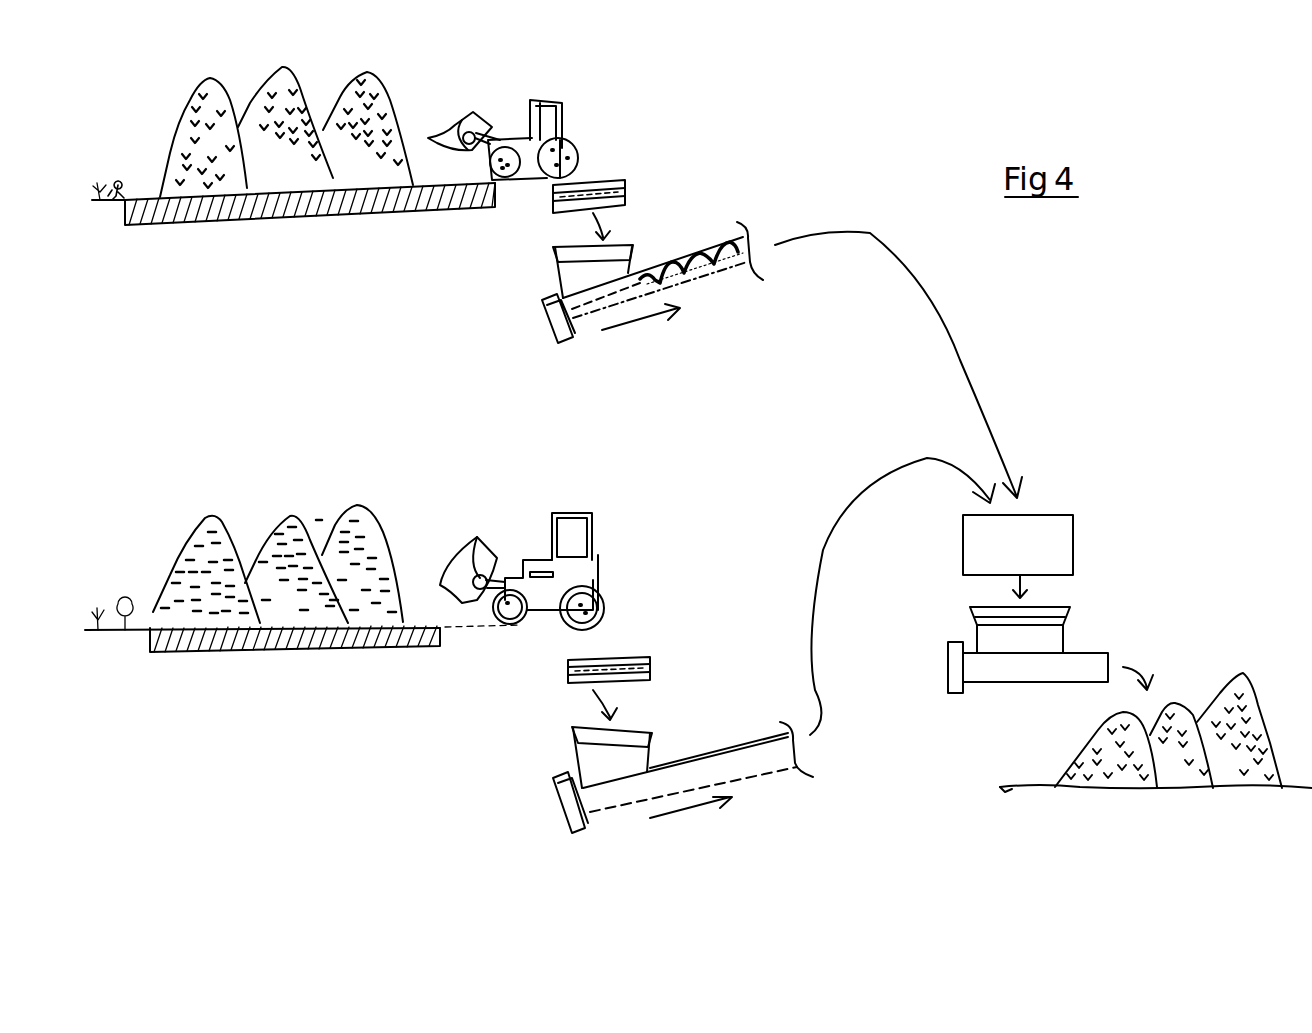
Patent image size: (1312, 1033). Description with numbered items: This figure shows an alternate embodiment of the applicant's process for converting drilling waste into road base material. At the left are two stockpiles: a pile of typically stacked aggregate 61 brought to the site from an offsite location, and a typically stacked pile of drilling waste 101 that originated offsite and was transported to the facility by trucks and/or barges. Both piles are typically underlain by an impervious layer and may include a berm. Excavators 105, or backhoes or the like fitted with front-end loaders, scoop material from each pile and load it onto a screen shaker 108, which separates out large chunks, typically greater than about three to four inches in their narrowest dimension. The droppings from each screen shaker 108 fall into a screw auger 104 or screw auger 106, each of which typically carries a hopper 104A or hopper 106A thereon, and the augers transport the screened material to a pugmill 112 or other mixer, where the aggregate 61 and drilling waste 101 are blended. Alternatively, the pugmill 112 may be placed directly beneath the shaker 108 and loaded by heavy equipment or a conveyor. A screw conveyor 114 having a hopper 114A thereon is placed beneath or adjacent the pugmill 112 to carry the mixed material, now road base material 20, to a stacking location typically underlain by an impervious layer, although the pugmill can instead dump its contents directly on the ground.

The aggregate 61 is at (408, 72).
The drilling waste 101 is at (403, 508).
The excavator 105 is at (578, 120).
The screen shaker 108 is at (638, 187).
The screw auger 104 is at (687, 242).
The hopper 104A is at (548, 275).
The screw auger 106 is at (695, 748).
The hopper 106A is at (577, 765).
The pugmill 112 is at (1083, 548).
The screw conveyor 114 is at (1055, 646).
The hopper 114A is at (1026, 641).
The road base material 20 is at (1058, 739).